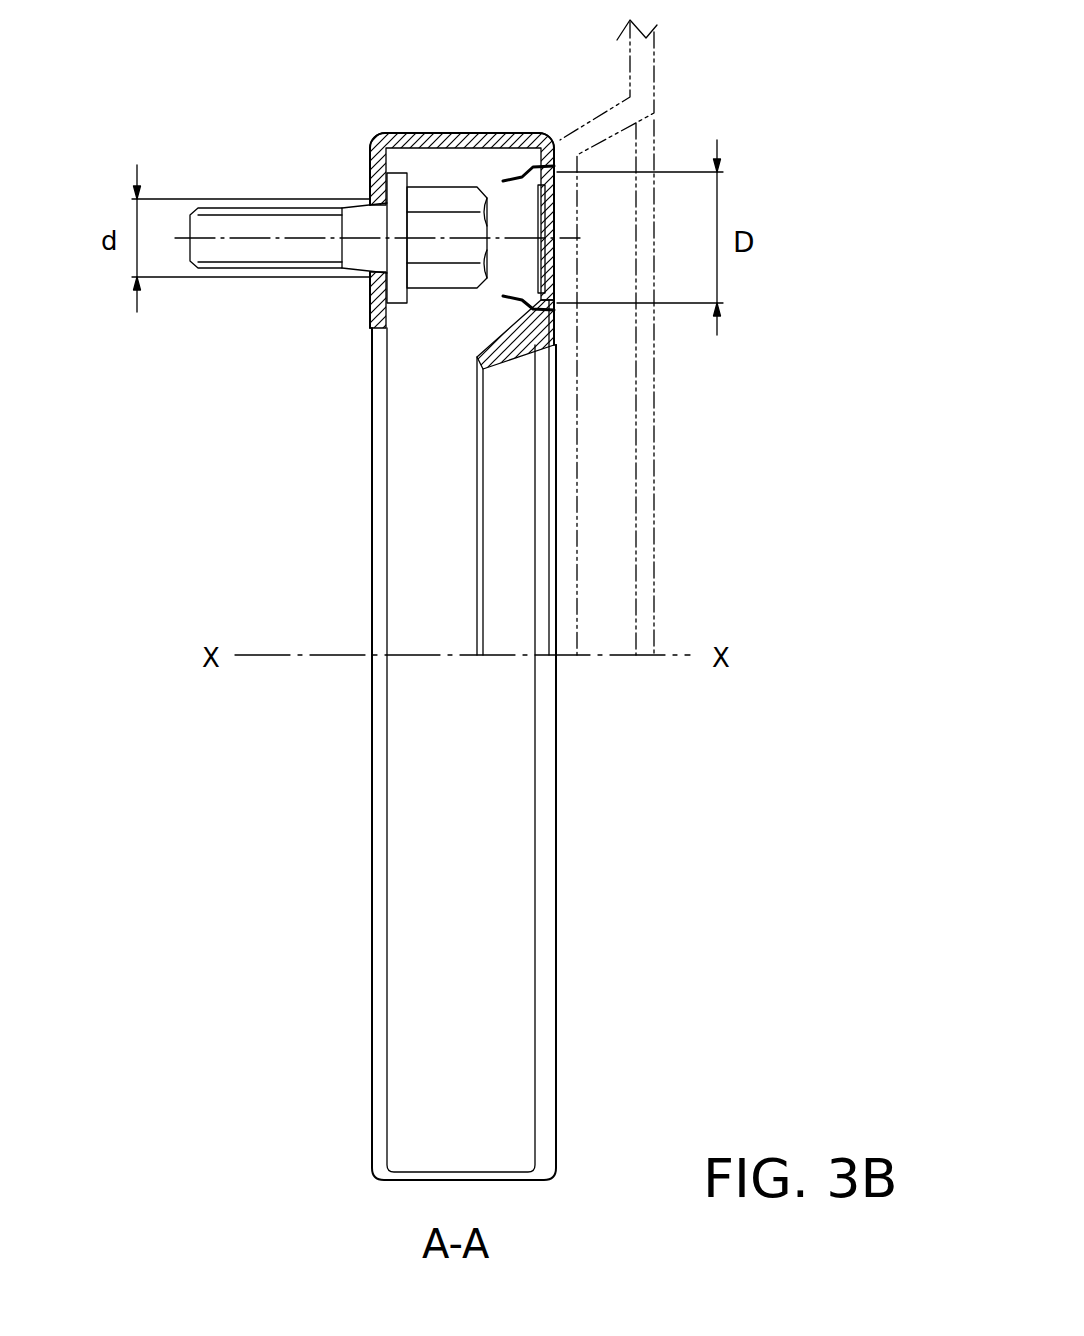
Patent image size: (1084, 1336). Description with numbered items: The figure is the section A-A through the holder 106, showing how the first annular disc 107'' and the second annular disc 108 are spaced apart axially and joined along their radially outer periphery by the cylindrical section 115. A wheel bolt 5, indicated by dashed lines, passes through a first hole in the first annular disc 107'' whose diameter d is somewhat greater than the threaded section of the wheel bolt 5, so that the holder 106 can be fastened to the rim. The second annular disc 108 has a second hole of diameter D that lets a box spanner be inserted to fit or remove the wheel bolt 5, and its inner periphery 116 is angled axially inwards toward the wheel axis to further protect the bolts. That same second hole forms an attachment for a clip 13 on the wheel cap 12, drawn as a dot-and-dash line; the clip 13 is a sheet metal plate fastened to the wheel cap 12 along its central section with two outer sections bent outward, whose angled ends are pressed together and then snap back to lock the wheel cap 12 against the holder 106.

The wheel bolt 5 is at (437, 200).
The cylindrical section 115 is at (473, 133).
The clip 13 is at (523, 170).
The first annular disc 107'' is at (329, 394).
The second annular disc 108 is at (555, 365).
The wheel cap 12 is at (622, 443).
The inner periphery 116 is at (515, 473).
The holder 106 is at (600, 800).